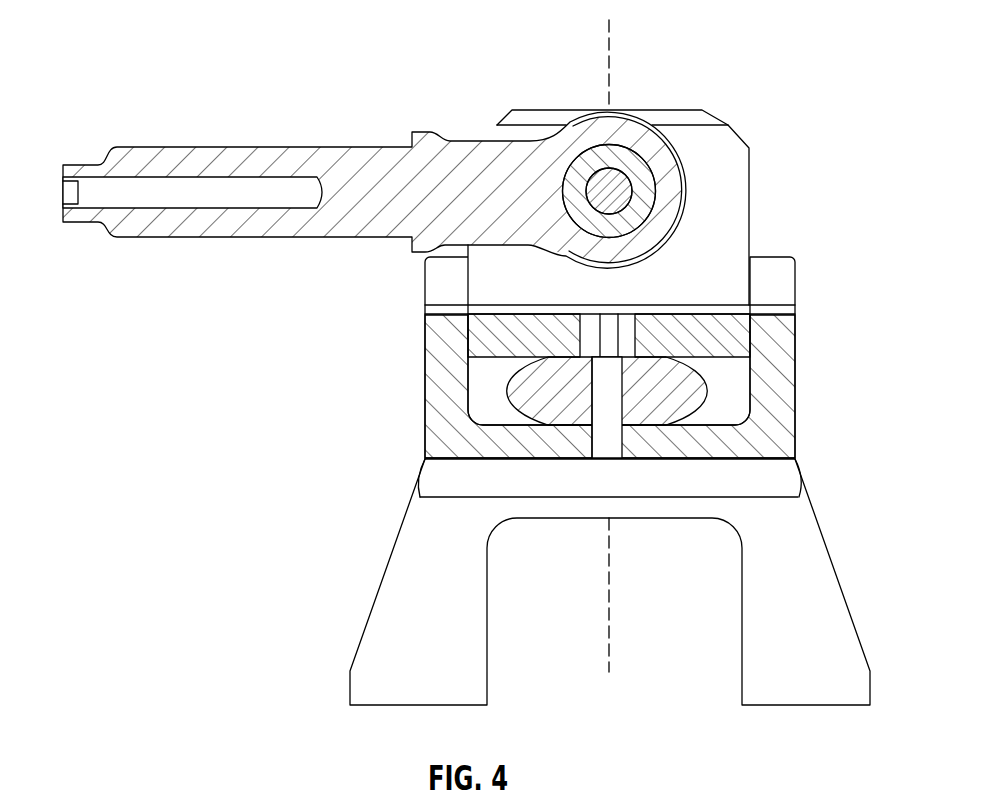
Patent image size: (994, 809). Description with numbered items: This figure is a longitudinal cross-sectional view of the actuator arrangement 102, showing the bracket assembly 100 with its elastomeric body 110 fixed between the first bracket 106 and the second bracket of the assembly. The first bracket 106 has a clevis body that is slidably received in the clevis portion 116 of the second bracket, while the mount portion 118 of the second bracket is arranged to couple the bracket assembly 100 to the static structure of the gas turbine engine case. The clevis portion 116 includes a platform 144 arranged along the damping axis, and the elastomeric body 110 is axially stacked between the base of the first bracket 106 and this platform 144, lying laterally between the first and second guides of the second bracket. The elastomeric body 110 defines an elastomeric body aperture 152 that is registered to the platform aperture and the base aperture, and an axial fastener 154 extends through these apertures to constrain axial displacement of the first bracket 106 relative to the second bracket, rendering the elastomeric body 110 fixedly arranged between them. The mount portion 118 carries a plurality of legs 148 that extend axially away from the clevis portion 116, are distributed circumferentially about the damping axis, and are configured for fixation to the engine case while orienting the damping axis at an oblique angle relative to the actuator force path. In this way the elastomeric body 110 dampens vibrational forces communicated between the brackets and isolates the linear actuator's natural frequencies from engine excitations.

The bracket assembly 100 is at (843, 388).
The actuator arrangement 102 is at (298, 85).
The first bracket 106 is at (706, 156).
The elastomeric body 110 is at (688, 392).
The clevis portion 116 is at (398, 378).
The mount portion 118 is at (365, 567).
The platform 144 is at (700, 336).
The legs 148 is at (585, 312).
The elastomeric body aperture 152 is at (627, 397).
The axial fastener 154 is at (592, 404).